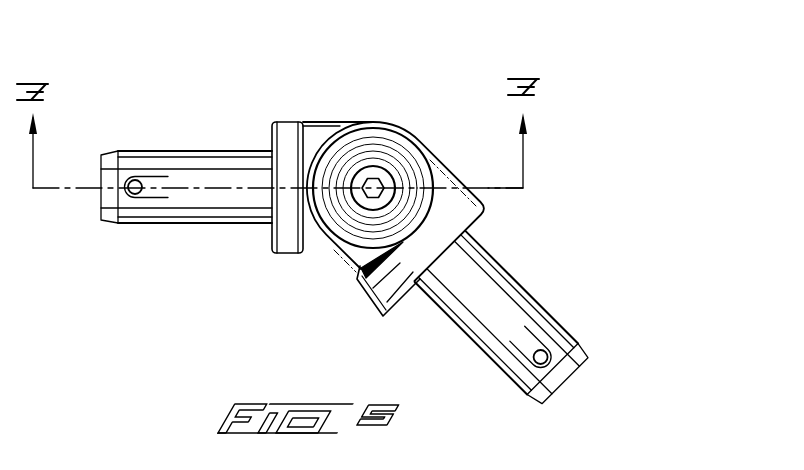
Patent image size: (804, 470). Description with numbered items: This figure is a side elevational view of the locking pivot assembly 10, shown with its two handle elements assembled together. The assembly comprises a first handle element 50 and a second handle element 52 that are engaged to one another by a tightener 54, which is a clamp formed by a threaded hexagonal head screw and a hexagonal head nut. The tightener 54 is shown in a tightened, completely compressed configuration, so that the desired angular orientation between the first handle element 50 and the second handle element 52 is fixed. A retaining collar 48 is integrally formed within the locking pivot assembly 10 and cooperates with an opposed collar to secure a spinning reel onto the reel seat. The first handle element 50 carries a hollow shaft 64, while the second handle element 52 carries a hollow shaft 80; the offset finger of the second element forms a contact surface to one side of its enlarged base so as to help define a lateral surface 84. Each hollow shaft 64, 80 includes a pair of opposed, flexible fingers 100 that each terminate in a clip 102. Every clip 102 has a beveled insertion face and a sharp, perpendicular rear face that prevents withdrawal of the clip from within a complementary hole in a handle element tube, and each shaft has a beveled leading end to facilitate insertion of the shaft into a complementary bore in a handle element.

The locking pivot assembly 10 is at (344, 205).
The retaining collar 48 is at (482, 233).
The first handle element 50 is at (448, 163).
The second handle element 52 is at (282, 259).
The tightener 54 is at (378, 179).
The hollow shaft 64 is at (523, 293).
The hollow shaft 80 is at (205, 227).
The lateral surface 84 is at (304, 233).
The flexible fingers 100 is at (154, 182).
The clip 102 is at (136, 176).